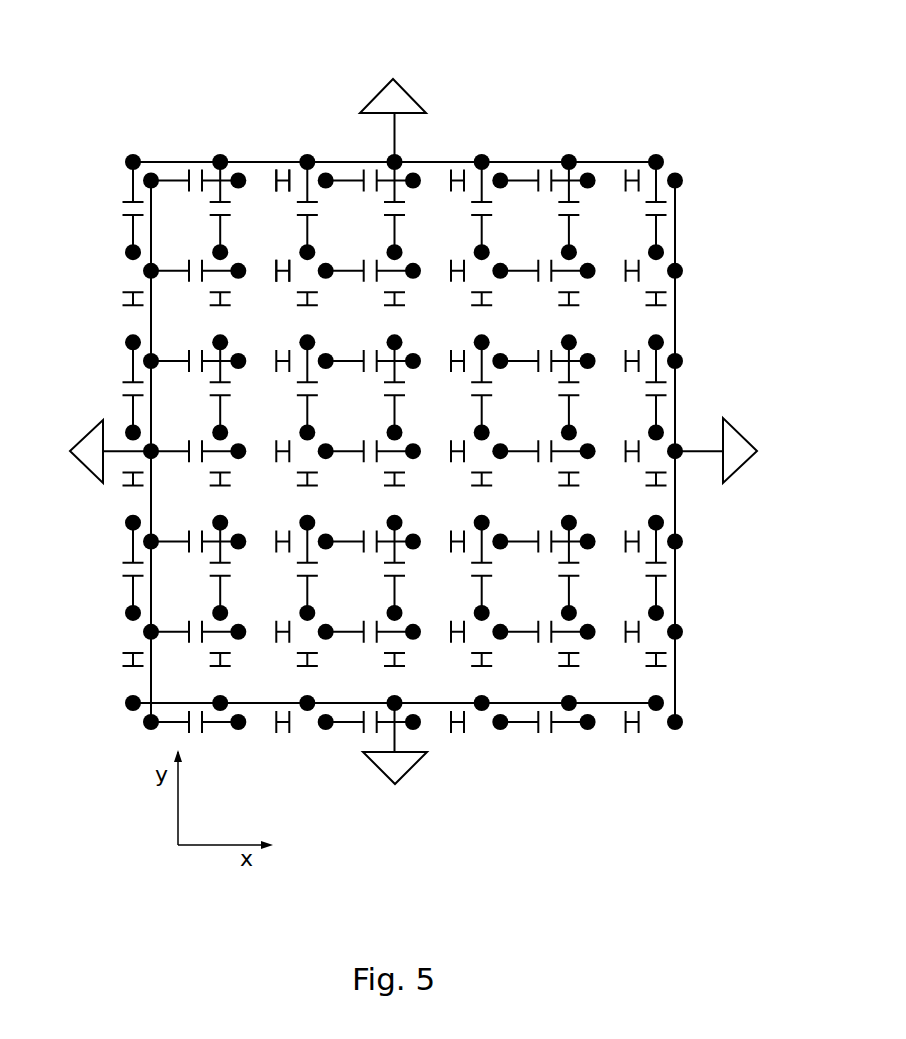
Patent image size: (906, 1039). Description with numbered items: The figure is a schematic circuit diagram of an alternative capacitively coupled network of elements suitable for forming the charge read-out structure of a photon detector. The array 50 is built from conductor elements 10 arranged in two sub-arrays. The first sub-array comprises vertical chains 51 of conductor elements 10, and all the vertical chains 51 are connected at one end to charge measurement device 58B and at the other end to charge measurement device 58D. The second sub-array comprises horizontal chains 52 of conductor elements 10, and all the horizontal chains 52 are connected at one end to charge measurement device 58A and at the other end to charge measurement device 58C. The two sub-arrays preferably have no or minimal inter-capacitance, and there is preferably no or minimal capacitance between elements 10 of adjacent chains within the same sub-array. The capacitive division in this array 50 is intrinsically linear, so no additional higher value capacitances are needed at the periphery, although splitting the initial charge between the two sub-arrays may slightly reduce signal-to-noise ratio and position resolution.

The array 50 is at (116, 100).
The vertical chains 51 is at (132, 273).
The horizontal chains 52 is at (253, 267).
The conductor elements 10 is at (478, 430).
The charge measurement device 58A is at (748, 432).
The charge measurement device 58B is at (416, 98).
The charge measurement device 58C is at (82, 442).
The charge measurement device 58D is at (415, 767).